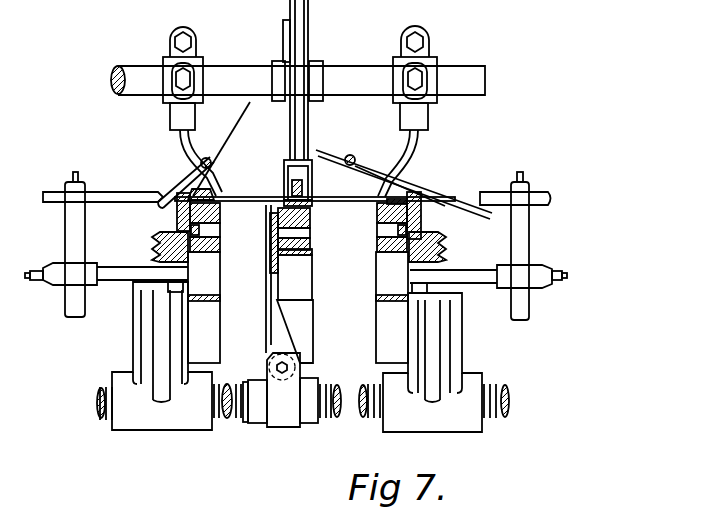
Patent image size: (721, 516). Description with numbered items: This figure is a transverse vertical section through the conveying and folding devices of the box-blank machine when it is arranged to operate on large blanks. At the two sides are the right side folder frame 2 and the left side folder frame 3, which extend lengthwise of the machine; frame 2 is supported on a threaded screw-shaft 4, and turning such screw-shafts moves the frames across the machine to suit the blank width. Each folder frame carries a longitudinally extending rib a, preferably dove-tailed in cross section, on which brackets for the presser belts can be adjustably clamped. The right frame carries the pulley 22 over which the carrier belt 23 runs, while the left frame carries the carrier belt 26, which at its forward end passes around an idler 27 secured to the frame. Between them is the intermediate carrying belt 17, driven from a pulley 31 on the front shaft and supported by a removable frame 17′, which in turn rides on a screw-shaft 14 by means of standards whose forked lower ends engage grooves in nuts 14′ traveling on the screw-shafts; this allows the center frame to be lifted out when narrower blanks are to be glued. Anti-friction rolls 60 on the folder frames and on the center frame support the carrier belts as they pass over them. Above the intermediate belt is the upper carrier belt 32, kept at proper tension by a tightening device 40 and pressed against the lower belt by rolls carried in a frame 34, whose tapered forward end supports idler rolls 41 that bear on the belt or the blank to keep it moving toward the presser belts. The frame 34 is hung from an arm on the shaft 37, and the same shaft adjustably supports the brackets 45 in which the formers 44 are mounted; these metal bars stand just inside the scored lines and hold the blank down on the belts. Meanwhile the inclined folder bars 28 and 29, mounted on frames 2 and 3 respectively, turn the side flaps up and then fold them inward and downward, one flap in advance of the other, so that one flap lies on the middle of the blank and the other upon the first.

The right side folder frame 2 is at (174, 212).
The left side folder frame 3 is at (422, 213).
The threaded screw-shaft 4 is at (93, 414).
The screw-shaft 14 is at (240, 423).
The nut 14′ is at (302, 427).
The intermediate carrying belt 17 is at (308, 274).
The frame 17′ is at (270, 214).
The pulley 22 is at (216, 289).
The belt 23 is at (208, 317).
The carrier belt 26 is at (378, 323).
The idler 27 is at (380, 274).
The inclined folder bar 28 is at (183, 177).
The inclined folder bar 29 is at (440, 190).
The pulley 31 is at (307, 265).
The upper carrier belt 32 is at (300, 34).
The frame 34 is at (288, 170).
The shaft 37 is at (484, 88).
The tightening device 40 is at (283, 24).
The idler rolls 41 is at (300, 160).
The formers 44 is at (212, 195).
The brackets 45 is at (175, 100).
The anti-friction rolls 60 is at (213, 249).
The rib a is at (152, 248).